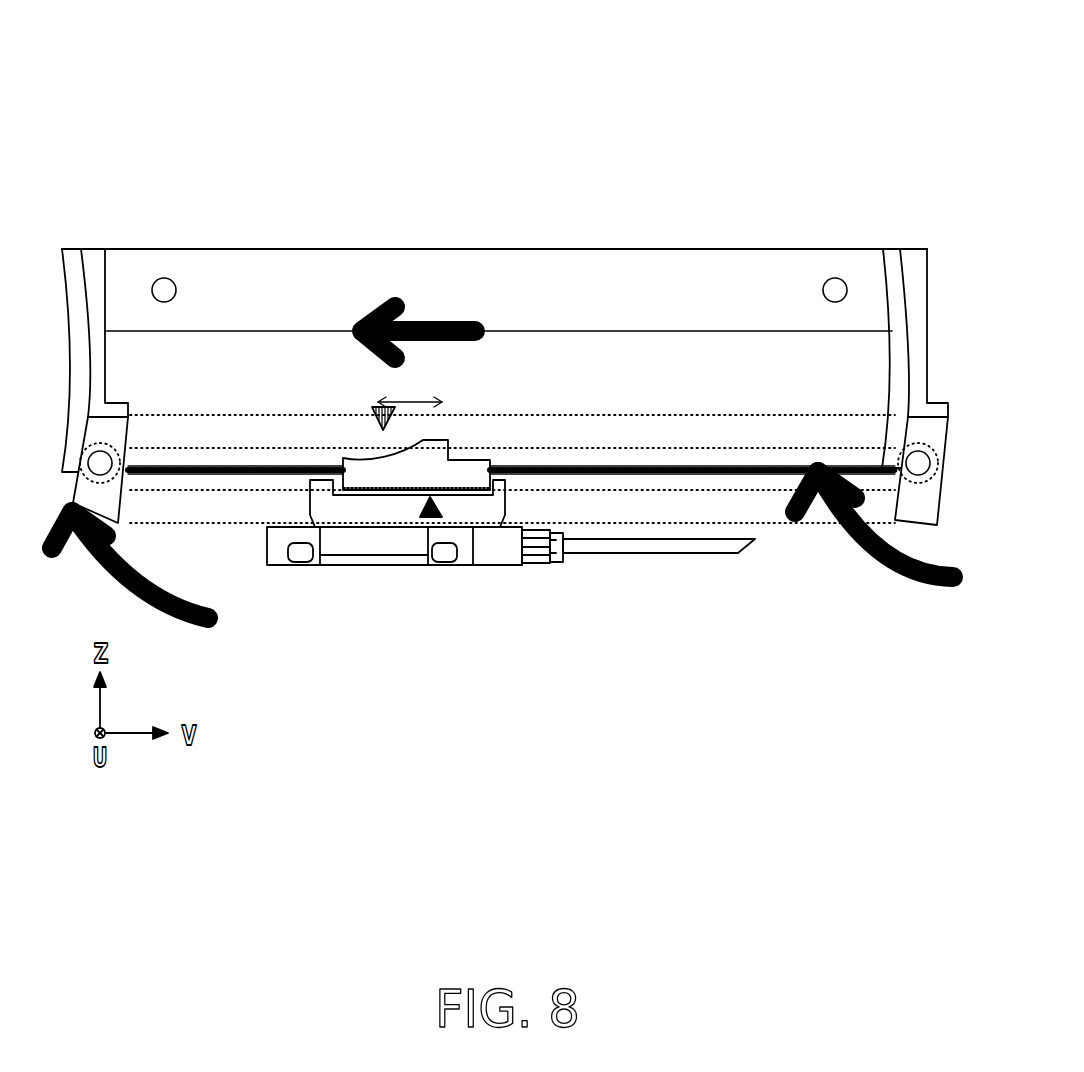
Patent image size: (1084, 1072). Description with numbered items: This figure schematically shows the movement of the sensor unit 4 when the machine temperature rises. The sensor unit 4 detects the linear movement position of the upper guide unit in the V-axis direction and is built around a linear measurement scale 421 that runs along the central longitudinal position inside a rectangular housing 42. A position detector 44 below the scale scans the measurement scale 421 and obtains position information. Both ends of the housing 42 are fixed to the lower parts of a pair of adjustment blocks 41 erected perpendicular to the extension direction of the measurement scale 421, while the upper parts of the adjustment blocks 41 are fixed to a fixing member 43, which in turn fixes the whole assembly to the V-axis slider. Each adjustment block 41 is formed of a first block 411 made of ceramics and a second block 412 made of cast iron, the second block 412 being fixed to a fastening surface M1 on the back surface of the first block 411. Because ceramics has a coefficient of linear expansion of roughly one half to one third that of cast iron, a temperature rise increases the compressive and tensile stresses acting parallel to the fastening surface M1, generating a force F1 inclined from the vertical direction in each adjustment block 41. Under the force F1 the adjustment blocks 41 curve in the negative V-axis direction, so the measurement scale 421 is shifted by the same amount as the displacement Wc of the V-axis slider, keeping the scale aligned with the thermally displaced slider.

The sensor unit 4 is at (493, 66).
The adjustment block 41 is at (94, 235).
The first block 411 is at (63, 250).
The second block 412 is at (103, 388).
The housing 42 is at (202, 523).
The measurement scale 421 is at (640, 470).
The fixing member 43 is at (462, 263).
The position detector 44 is at (367, 560).
The fastening surface M1 is at (88, 272).
The force F1 is at (160, 620).
The measurement width Wc is at (424, 398).